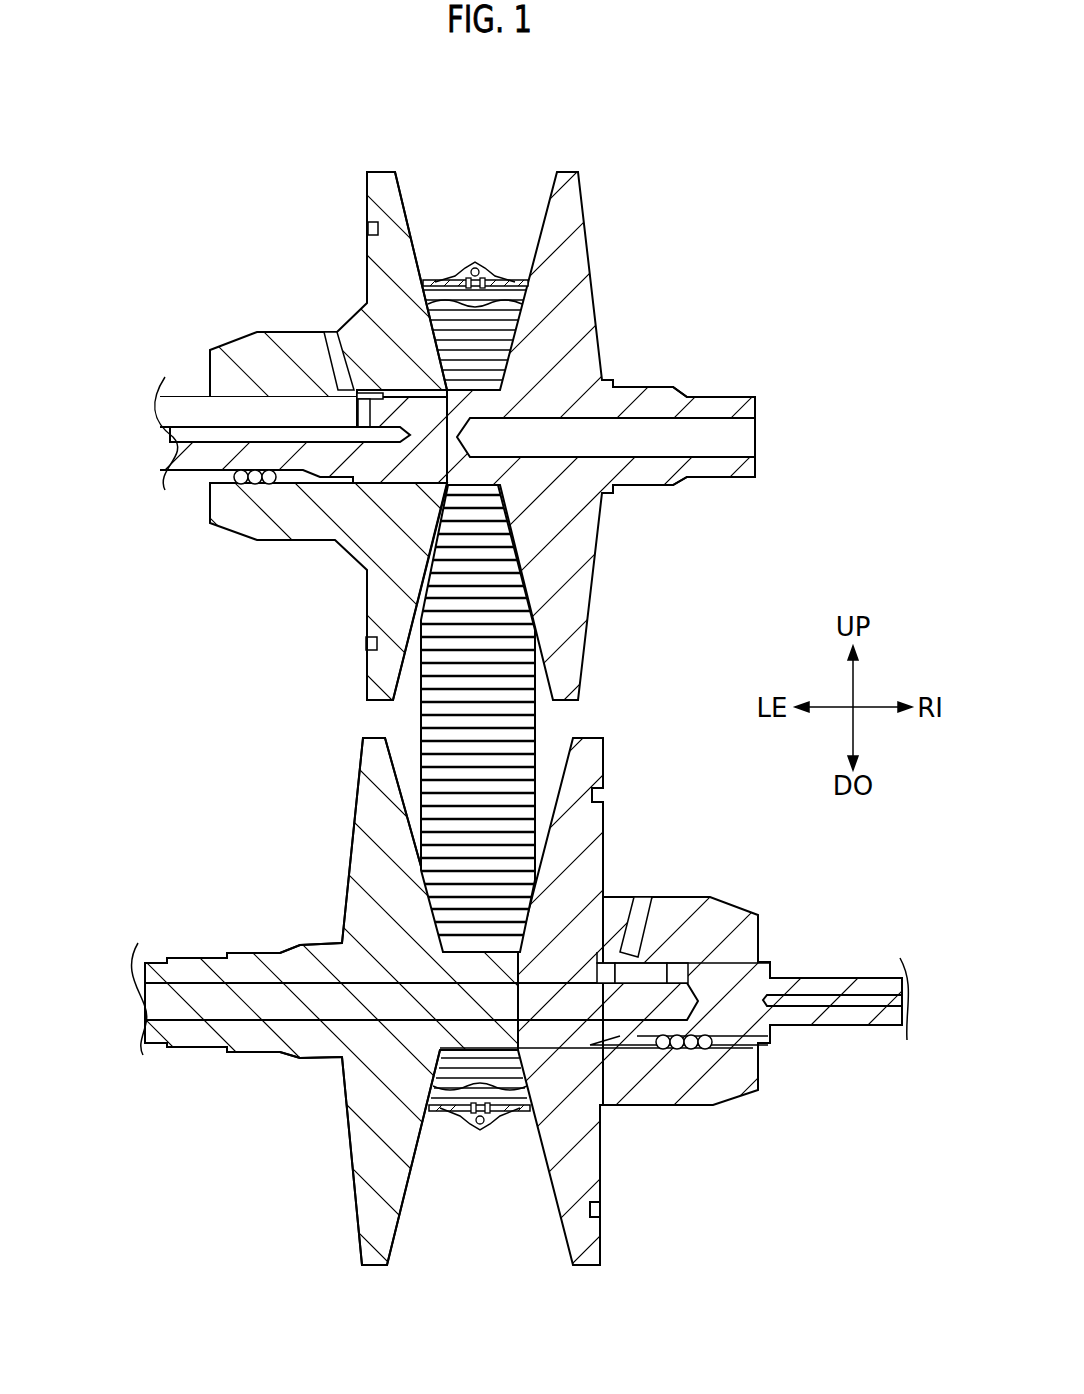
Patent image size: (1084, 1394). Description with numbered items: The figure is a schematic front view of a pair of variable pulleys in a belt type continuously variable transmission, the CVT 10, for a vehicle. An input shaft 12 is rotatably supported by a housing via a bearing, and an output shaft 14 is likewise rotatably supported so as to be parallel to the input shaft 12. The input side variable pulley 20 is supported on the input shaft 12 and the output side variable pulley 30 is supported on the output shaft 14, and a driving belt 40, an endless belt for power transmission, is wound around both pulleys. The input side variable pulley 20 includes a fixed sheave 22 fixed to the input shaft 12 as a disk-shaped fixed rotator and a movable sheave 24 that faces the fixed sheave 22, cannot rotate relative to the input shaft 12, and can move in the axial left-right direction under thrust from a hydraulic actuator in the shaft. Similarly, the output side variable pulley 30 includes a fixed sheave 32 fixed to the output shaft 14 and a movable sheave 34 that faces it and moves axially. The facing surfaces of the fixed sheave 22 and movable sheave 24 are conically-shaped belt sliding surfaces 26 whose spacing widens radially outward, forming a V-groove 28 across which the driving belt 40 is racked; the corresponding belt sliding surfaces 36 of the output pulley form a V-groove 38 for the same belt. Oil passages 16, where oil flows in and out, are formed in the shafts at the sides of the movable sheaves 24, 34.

The CVT 10 is at (542, 723).
The input shaft 12 is at (673, 399).
The output shaft 14 is at (252, 965).
The oil passages 16 is at (175, 430).
The input side variable pulley 20 is at (542, 750).
The fixed sheave 22 is at (577, 250).
The movable sheave 24 is at (372, 198).
The belt sliding surfaces 26 is at (550, 200).
The V-groove 28 is at (458, 220).
The output side variable pulley 30 is at (542, 750).
The fixed sheave 32 is at (362, 1190).
The movable sheave 34 is at (603, 1222).
The belt sliding surfaces 36 is at (496, 1289).
The V-groove 38 is at (458, 1205).
The driving belt 40 is at (551, 728).